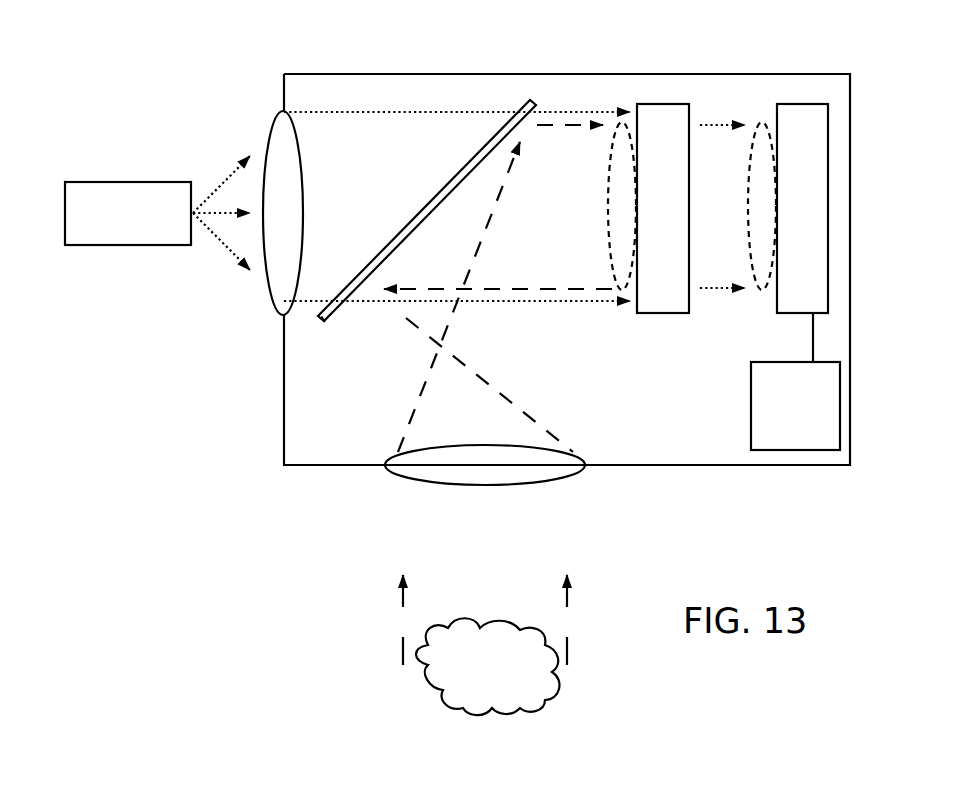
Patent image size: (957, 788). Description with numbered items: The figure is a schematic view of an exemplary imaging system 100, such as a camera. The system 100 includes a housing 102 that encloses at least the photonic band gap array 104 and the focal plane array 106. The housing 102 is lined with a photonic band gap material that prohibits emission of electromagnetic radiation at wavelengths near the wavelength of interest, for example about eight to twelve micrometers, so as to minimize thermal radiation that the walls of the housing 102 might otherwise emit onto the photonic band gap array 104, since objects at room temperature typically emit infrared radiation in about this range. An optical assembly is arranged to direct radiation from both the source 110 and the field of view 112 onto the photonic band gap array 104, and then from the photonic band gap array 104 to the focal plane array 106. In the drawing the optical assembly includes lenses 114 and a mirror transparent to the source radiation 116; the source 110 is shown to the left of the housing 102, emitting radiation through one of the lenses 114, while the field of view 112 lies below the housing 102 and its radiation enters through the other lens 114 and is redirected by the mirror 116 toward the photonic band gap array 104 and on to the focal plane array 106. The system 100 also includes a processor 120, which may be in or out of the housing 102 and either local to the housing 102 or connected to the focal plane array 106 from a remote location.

The imaging system 100 is at (218, 482).
The housing 102 is at (437, 74).
The photonic band gap array 104 is at (671, 117).
The focal plane array 106 is at (803, 135).
The source 110 is at (117, 182).
The field of view 112 is at (377, 613).
The lenses 114 is at (276, 279).
The mirror transparent to the source radiation 116 is at (320, 322).
The processor 120 is at (805, 437).